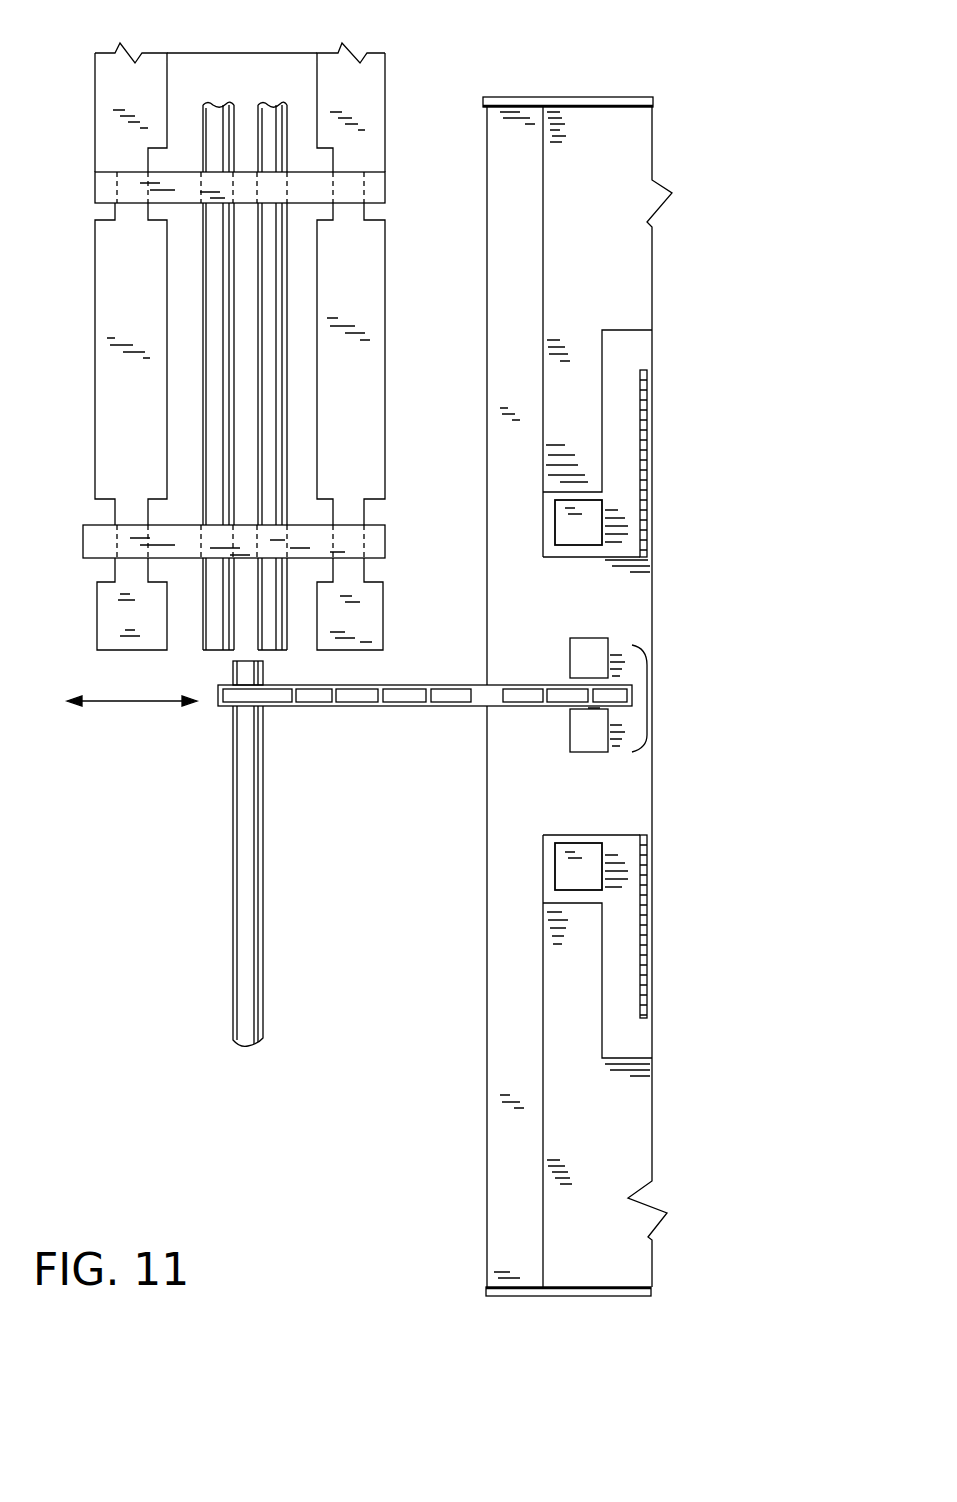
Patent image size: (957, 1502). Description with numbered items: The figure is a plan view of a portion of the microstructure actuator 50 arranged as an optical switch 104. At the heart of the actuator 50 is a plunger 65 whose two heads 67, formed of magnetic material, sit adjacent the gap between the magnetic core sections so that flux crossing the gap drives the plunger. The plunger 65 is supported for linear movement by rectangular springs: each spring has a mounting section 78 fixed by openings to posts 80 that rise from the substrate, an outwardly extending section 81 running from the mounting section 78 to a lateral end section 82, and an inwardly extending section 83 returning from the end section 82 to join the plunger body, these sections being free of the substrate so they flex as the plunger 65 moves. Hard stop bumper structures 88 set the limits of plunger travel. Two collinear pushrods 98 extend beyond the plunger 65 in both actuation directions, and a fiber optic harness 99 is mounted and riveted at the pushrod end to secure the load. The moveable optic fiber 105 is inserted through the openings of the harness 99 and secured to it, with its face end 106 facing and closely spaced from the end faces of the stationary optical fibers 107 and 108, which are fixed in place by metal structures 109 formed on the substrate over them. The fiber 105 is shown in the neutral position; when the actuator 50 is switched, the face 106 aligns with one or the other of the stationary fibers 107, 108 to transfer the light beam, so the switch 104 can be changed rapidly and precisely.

The actuator 50 is at (524, 88).
The end section 82 is at (585, 97).
The outwardly extending section 81 is at (544, 265).
The inwardly extending section 83 is at (487, 362).
The mounting section 78 is at (563, 490).
The post 80 is at (558, 545).
The plunger 65 is at (524, 665).
The hard stop bumper structure 88 is at (575, 752).
The plunger head 67 is at (635, 748).
The metal structure 109 is at (103, 535).
The stationary optical fiber 107 is at (210, 615).
The stationary optical fiber 108 is at (282, 600).
The face end 106 is at (270, 661).
The moveable optic fiber 105 is at (235, 935).
The optical switch 104 is at (133, 835).
The fiber optic harness 99 is at (294, 708).
The pushrod 98 is at (408, 706).